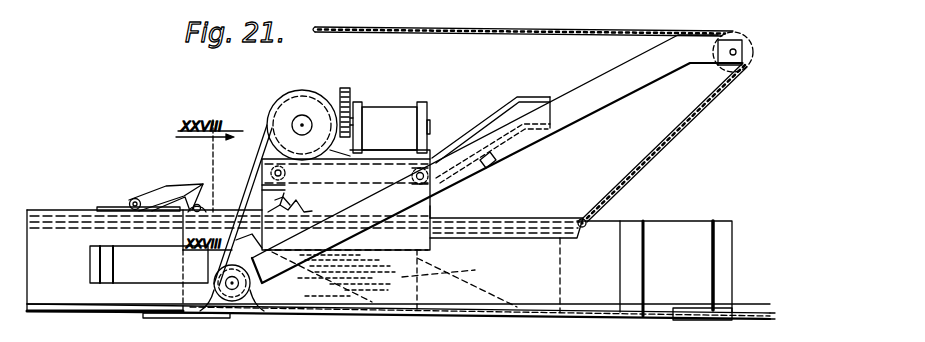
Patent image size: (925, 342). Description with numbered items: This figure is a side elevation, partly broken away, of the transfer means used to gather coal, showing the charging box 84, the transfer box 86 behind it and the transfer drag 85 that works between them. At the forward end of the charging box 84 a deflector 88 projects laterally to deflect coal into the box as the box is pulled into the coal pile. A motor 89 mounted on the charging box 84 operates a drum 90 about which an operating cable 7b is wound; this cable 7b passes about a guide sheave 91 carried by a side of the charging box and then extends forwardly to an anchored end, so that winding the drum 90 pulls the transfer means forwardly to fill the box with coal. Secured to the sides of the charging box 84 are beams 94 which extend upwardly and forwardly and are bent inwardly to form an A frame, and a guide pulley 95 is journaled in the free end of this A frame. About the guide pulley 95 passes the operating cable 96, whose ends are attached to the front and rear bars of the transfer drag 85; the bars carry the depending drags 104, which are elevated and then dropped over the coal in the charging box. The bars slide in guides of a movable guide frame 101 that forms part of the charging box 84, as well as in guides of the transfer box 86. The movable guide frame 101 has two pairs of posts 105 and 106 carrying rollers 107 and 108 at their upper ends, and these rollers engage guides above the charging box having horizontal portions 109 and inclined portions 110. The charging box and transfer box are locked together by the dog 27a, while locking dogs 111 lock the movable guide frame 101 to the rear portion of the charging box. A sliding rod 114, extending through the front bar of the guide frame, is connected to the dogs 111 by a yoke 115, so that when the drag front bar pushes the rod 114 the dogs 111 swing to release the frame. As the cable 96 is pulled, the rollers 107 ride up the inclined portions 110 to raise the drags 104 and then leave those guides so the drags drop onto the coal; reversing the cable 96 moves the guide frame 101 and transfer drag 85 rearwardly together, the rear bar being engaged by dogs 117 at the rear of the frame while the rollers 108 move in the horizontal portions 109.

The operating cable 7b is at (343, 307).
The dog 27a is at (170, 191).
The charging box 84 is at (404, 310).
The transfer drag 85 is at (760, 327).
The transfer box 86 is at (398, 259).
The deflector 88 is at (646, 270).
The motor 89 is at (383, 112).
The drum 90 is at (301, 95).
The guide sheave 91 is at (232, 291).
The beam 94 is at (578, 95).
The guide pulley 95 is at (742, 37).
The operating cable 96 is at (528, 31).
The movable guide frame 101 is at (506, 221).
The drag 104 is at (394, 280).
The post 105 is at (435, 205).
The post 106 is at (252, 178).
The roller 107 is at (428, 176).
The roller 108 is at (257, 165).
The horizontal portion of guide 109 is at (376, 172).
The inclined portion of guide 110 is at (496, 129).
The locking dog 111 is at (250, 194).
The sliding rod 114 is at (552, 215).
The yoke 115 is at (287, 209).
The dog 117 is at (251, 244).